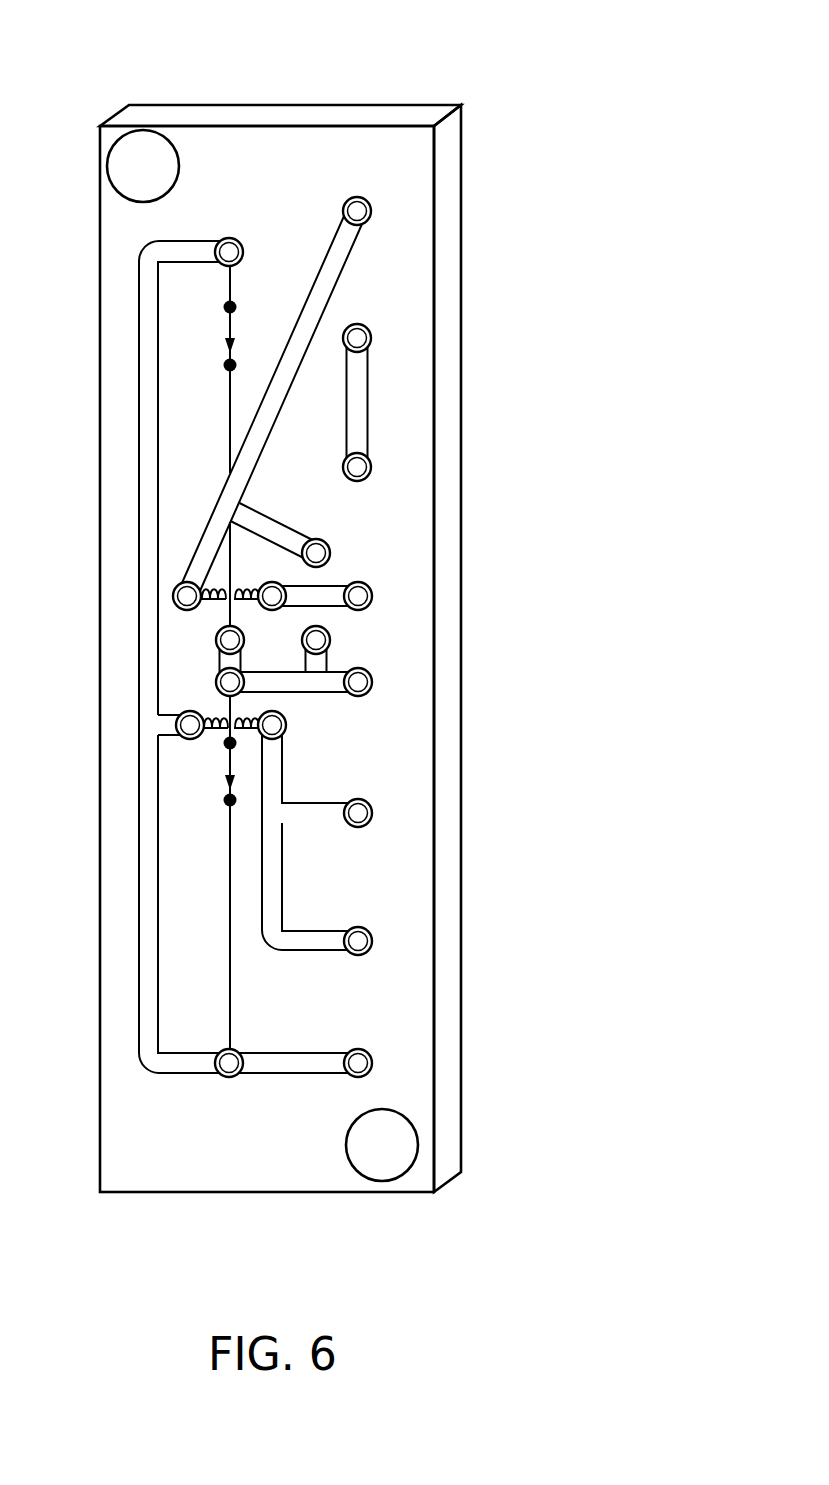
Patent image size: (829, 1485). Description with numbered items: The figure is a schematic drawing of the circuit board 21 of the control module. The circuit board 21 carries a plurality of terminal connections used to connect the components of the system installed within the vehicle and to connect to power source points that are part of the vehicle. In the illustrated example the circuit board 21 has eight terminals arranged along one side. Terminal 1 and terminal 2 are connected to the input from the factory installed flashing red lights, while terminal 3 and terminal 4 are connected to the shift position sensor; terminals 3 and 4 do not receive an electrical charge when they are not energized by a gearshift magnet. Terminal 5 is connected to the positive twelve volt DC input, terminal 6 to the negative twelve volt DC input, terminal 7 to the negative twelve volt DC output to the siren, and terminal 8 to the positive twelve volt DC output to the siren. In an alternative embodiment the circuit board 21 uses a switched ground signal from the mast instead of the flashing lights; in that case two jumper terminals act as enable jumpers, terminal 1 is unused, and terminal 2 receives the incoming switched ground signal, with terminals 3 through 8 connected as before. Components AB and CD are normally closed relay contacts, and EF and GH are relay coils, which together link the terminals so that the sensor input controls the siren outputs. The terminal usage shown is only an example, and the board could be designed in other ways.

The circuit board 21 is at (485, 112).
The terminal 1 is at (380, 211).
The terminal 2 is at (380, 338).
The terminal 3 is at (380, 467).
The terminal 4 is at (381, 596).
The terminal 5 is at (381, 682).
The terminal 6 is at (381, 813).
The terminal 7 is at (381, 941).
The terminal 8 is at (381, 1063).